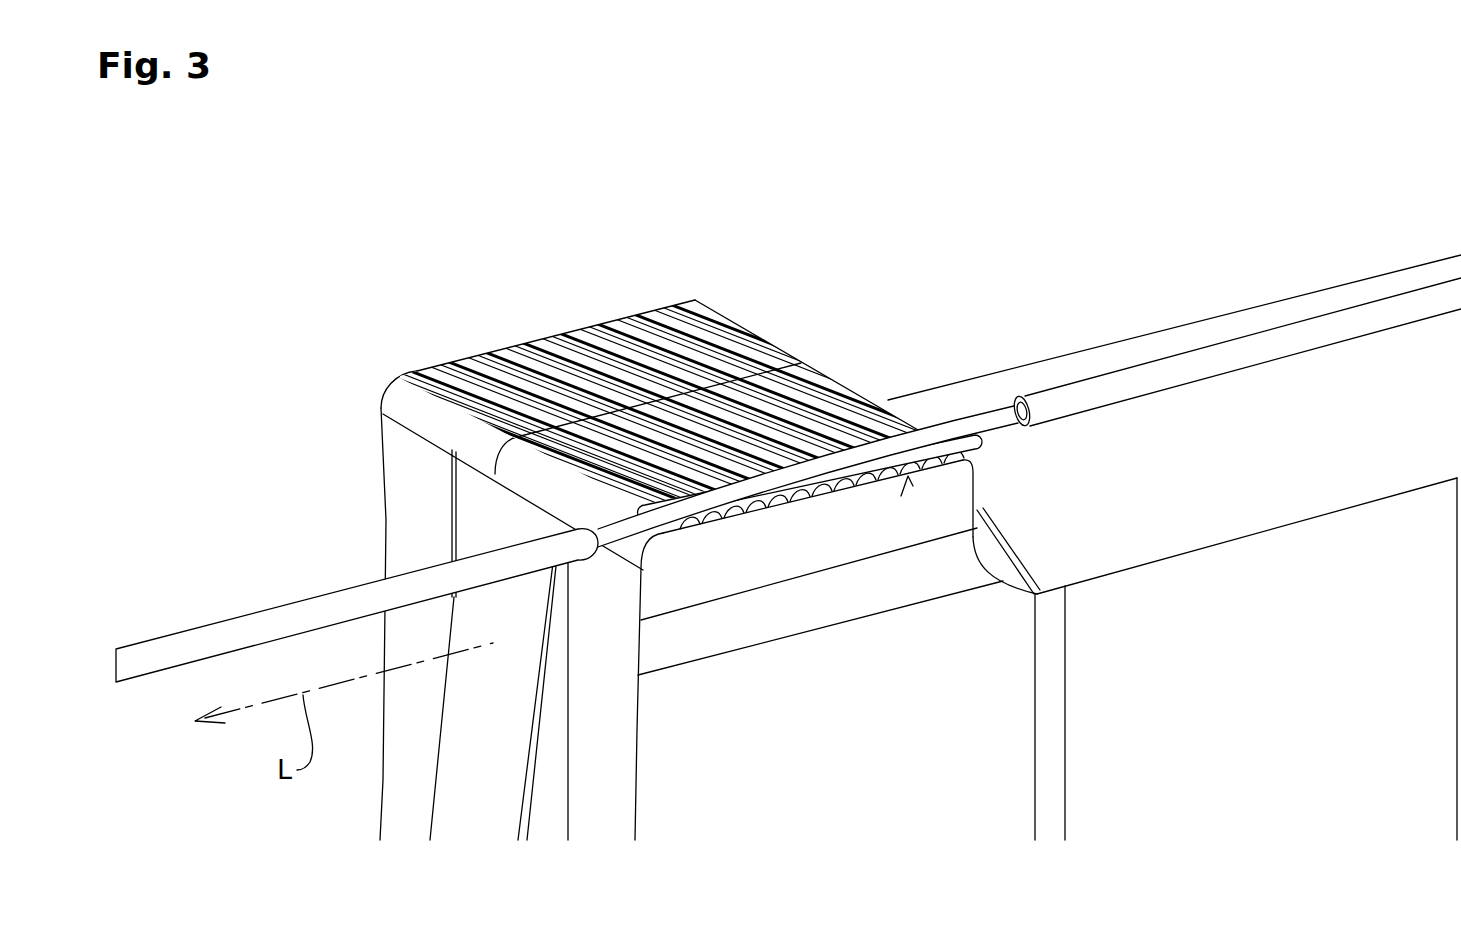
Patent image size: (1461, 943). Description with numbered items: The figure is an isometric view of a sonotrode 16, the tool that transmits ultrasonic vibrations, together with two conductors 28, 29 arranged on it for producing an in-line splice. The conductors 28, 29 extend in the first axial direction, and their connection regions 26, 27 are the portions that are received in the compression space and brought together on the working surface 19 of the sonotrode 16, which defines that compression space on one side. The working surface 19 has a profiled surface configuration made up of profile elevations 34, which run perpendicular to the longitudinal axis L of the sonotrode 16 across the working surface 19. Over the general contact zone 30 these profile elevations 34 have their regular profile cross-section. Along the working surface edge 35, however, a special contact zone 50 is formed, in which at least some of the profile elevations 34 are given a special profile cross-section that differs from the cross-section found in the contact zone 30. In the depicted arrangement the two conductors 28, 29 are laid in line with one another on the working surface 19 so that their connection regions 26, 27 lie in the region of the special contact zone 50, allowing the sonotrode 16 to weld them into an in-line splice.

The sonotrode 16 is at (788, 581).
The working surface 19 is at (697, 495).
The connection region 26 is at (774, 605).
The connection region 27 is at (827, 472).
The conductor 28 is at (498, 585).
The conductor 29 is at (1140, 366).
The contact zone 30 is at (763, 360).
The profile elevations 34 is at (494, 352).
The working surface edge 35 is at (907, 478).
The special contact zone 50 is at (822, 507).